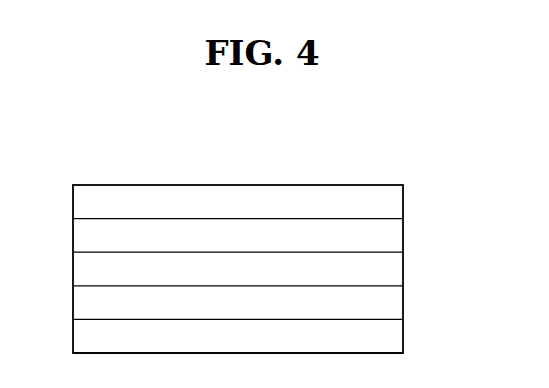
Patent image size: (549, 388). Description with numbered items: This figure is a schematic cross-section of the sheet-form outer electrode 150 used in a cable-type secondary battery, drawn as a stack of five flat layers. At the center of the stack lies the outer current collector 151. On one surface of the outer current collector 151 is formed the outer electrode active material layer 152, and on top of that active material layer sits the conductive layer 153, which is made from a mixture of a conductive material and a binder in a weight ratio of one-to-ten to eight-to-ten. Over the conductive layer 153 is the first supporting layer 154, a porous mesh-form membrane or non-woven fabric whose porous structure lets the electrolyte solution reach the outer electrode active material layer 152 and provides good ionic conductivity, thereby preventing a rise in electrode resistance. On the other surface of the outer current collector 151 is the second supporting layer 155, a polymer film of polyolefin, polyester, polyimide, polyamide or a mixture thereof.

The outer electrode 150 is at (114, 146).
The outer current collector 151 is at (405, 303).
The outer electrode active material layer 152 is at (405, 270).
The conductive layer 153 is at (405, 237).
The first supporting layer 154 is at (405, 203).
The second supporting layer 155 is at (405, 337).